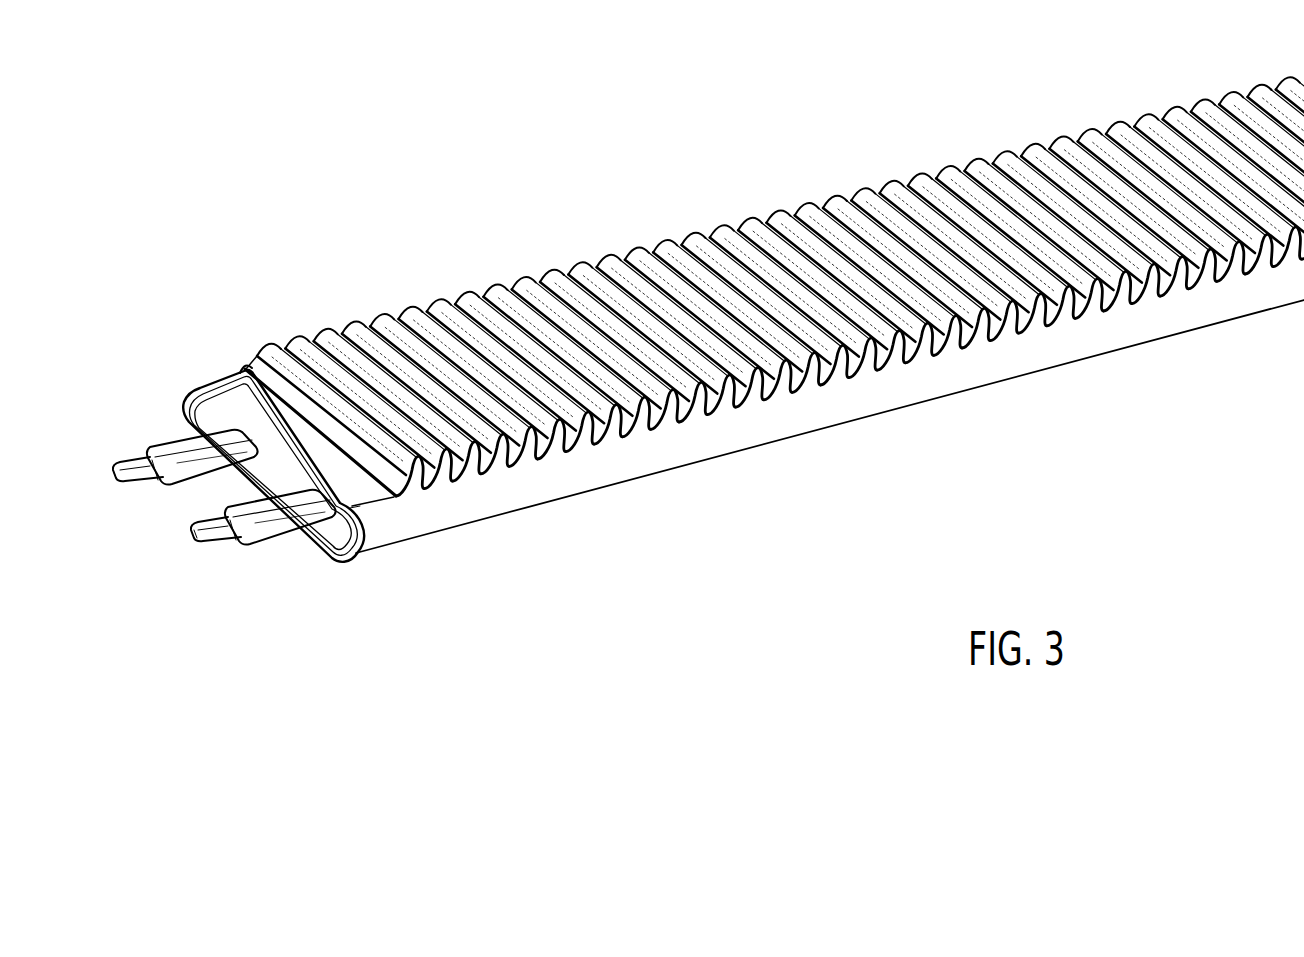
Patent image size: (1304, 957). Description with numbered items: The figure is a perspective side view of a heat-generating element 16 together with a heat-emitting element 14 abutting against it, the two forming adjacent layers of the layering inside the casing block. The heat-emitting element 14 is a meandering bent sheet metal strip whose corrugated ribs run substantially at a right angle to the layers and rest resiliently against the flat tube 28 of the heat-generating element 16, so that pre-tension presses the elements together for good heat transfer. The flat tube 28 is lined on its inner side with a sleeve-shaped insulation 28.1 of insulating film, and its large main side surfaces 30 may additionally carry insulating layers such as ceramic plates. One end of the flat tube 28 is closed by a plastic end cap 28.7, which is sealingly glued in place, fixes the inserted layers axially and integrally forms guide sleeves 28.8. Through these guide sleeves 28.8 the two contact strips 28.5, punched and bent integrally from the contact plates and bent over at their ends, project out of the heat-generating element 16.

The heat-emitting element 14 is at (342, 324).
The heat-generating element 16 is at (190, 381).
The flat tube 28 is at (380, 538).
The insulation 28.1 is at (313, 541).
The contact strip 28.5 is at (113, 478).
The end cap 28.7 is at (333, 554).
The guide sleeve 28.8 is at (149, 447).
The main side surface 30 is at (347, 481).